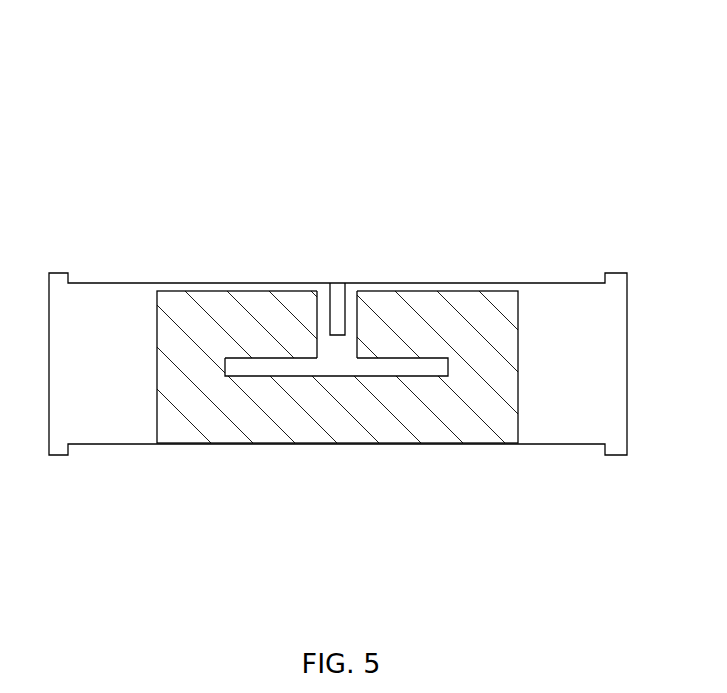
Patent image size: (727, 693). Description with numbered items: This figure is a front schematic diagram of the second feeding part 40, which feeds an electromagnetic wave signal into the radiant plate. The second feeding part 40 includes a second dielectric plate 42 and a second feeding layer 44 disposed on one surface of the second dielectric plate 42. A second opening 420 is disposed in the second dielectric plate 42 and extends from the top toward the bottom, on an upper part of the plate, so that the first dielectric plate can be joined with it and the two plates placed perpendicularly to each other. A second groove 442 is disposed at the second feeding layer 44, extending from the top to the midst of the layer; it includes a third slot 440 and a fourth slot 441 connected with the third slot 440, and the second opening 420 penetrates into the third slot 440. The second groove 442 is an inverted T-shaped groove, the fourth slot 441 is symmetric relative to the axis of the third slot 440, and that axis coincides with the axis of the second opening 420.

The second feeding part 40 is at (328, 71).
The second dielectric plate 42 is at (97, 412).
The second feeding layer 44 is at (277, 412).
The second opening 420 is at (338, 305).
The third slot 440 is at (348, 323).
The fourth slot 441 is at (377, 370).
The second groove 442 is at (541, 121).